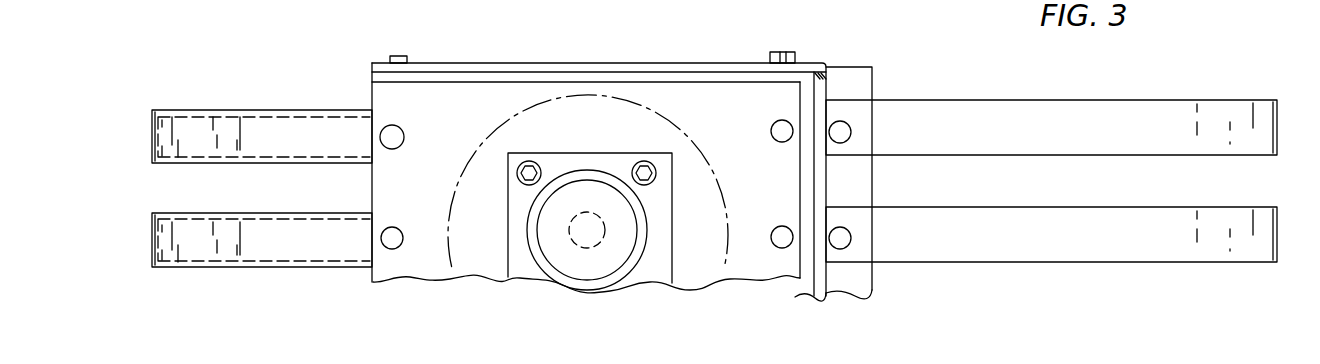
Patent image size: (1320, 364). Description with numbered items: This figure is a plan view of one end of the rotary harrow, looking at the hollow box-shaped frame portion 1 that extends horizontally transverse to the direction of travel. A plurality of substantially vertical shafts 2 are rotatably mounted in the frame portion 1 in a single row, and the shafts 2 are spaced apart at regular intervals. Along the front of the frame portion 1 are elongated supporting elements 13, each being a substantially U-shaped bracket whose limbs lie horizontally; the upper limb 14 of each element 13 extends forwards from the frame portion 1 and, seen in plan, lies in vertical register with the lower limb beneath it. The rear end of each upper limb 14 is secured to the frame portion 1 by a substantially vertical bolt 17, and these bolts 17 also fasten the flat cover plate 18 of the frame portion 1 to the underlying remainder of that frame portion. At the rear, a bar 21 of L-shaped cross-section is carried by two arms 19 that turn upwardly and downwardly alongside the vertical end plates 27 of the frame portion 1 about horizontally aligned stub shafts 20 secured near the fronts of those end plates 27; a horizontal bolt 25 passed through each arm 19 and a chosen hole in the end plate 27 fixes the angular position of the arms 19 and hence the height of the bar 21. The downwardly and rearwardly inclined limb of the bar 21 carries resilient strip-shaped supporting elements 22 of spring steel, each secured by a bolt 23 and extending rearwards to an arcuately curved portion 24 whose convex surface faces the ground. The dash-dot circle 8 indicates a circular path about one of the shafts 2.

The hollow box-shaped frame portion 1 is at (406, 286).
The shaft 2 is at (587, 218).
The circular path of swing 8 is at (485, 151).
The elongated supporting element 13 is at (222, 87).
The upper limb 14 is at (295, 143).
The bolt 17 is at (398, 150).
The cover plate 18 is at (750, 267).
The arm 19 is at (730, 41).
The stub shaft 20 is at (400, 56).
The bar 21 is at (860, 88).
The elongated supporting element 22 is at (1046, 267).
The bolt 23 is at (851, 129).
The arcuately curved portion 24 is at (1217, 126).
The bolt 25 is at (786, 50).
The end plate 27 is at (610, 56).